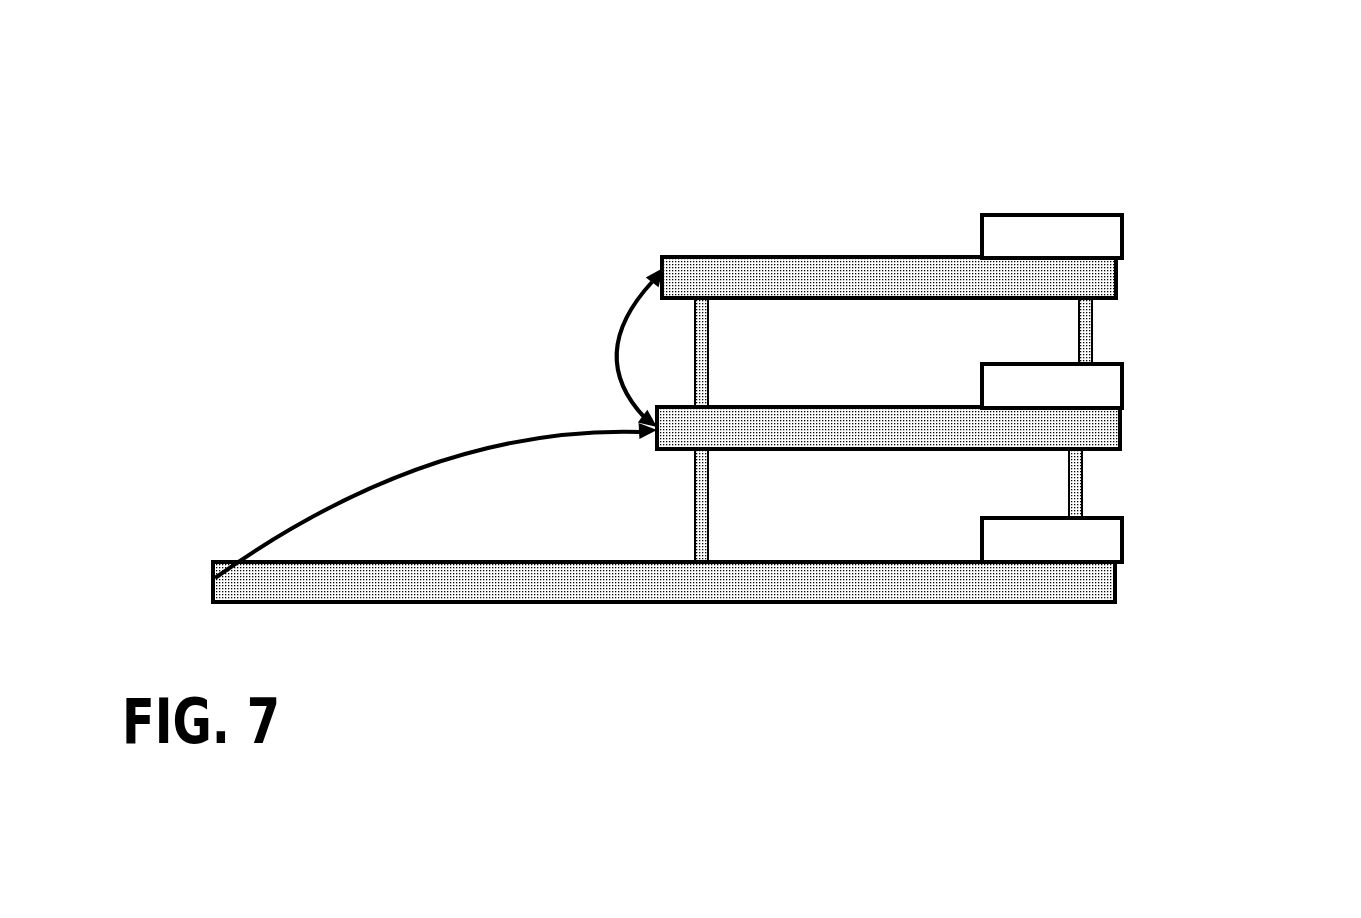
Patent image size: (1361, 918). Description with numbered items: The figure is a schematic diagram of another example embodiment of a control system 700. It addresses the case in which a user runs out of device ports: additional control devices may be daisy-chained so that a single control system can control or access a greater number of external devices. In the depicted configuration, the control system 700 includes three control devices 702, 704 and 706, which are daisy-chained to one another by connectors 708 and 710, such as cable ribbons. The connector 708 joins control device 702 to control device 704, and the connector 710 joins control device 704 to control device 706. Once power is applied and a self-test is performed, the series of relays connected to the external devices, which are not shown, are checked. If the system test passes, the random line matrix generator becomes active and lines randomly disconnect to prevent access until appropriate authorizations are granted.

The control system 700 is at (1188, 148).
The control device 702 is at (1140, 528).
The control device 704 is at (1140, 373).
The control device 706 is at (1150, 228).
The connector 708 is at (468, 430).
The connector 710 is at (608, 280).